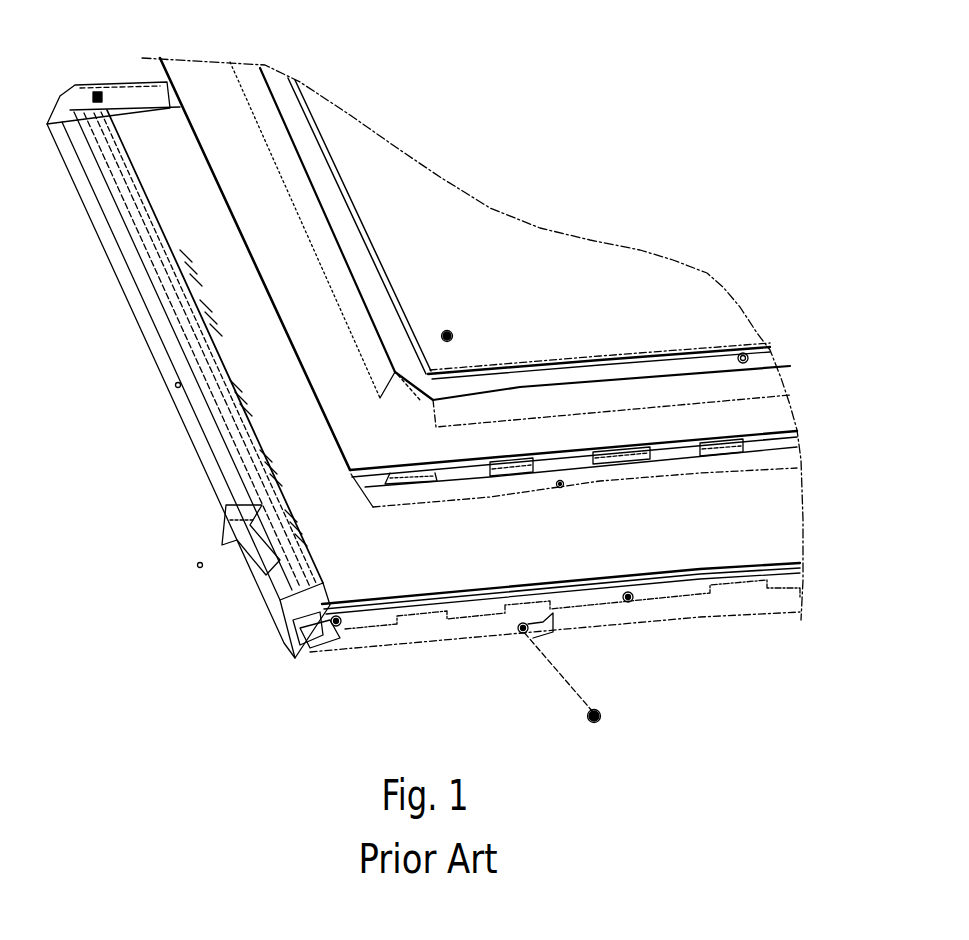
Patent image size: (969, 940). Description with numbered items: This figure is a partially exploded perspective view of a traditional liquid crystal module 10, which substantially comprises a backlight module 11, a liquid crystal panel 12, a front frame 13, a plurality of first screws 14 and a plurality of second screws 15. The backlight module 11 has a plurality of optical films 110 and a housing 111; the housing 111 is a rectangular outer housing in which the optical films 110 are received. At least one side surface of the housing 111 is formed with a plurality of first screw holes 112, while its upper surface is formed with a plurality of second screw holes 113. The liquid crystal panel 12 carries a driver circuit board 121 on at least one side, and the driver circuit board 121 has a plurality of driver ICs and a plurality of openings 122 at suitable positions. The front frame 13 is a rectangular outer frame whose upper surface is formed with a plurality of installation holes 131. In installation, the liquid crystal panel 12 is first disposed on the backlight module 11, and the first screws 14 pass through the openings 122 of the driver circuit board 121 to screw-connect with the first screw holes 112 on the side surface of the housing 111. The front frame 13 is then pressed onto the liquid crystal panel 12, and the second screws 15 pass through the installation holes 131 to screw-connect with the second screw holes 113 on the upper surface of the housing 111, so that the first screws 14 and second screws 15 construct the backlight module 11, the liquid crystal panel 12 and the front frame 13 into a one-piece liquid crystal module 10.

The liquid crystal module 10 is at (66, 41).
The backlight module 11 is at (205, 505).
The optical films 110 is at (245, 530).
The housing 111 is at (306, 652).
The first screw holes 112 is at (532, 633).
The second screw holes 113 is at (355, 632).
The liquid crystal panel 12 is at (303, 410).
The driver circuit board 121 is at (508, 490).
The openings 122 is at (560, 488).
The front frame 13 is at (778, 417).
The installation holes 131 is at (572, 362).
The first screws 14 is at (603, 712).
The second screws 15 is at (450, 331).